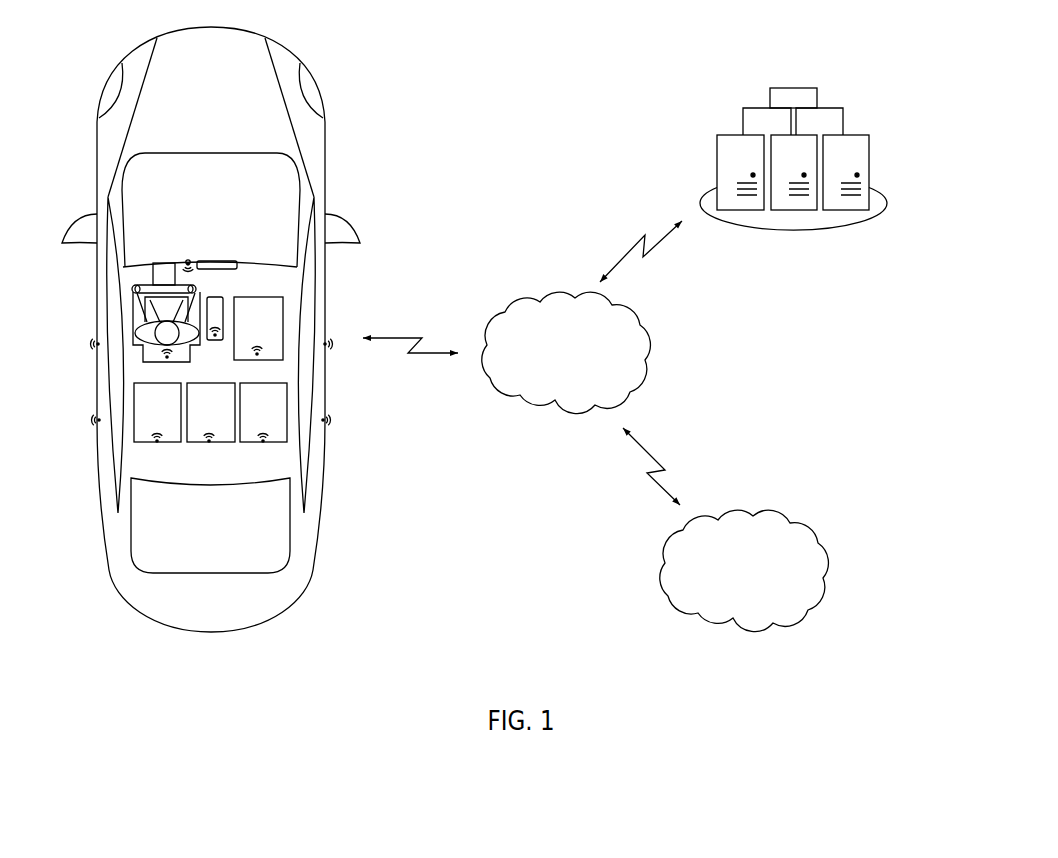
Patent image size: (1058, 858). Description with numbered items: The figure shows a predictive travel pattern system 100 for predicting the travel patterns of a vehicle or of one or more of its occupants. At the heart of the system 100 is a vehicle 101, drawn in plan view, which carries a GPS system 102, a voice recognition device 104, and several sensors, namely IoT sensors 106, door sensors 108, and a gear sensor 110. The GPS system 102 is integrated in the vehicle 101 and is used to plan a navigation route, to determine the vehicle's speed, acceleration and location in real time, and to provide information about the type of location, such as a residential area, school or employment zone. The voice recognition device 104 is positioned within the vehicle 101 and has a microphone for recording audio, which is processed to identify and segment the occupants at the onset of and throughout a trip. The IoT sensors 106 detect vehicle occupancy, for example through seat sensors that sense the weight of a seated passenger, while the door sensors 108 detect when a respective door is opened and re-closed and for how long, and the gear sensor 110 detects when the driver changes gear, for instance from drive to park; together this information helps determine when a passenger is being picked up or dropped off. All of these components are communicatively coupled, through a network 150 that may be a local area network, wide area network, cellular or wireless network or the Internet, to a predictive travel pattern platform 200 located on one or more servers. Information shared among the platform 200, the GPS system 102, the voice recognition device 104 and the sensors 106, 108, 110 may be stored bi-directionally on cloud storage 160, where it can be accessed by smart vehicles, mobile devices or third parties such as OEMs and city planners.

The predictive travel pattern system 100 is at (626, 56).
The vehicle 101 is at (86, 61).
The GPS system 102 is at (222, 261).
The voice recognition device 104 is at (188, 260).
The IoT sensors 106 is at (167, 359).
The door sensors 108 is at (97, 342).
The gear sensor 110 is at (215, 341).
The network 150 is at (553, 354).
The cloud storage 160 is at (729, 572).
The predictive travel pattern platform 200 is at (870, 135).